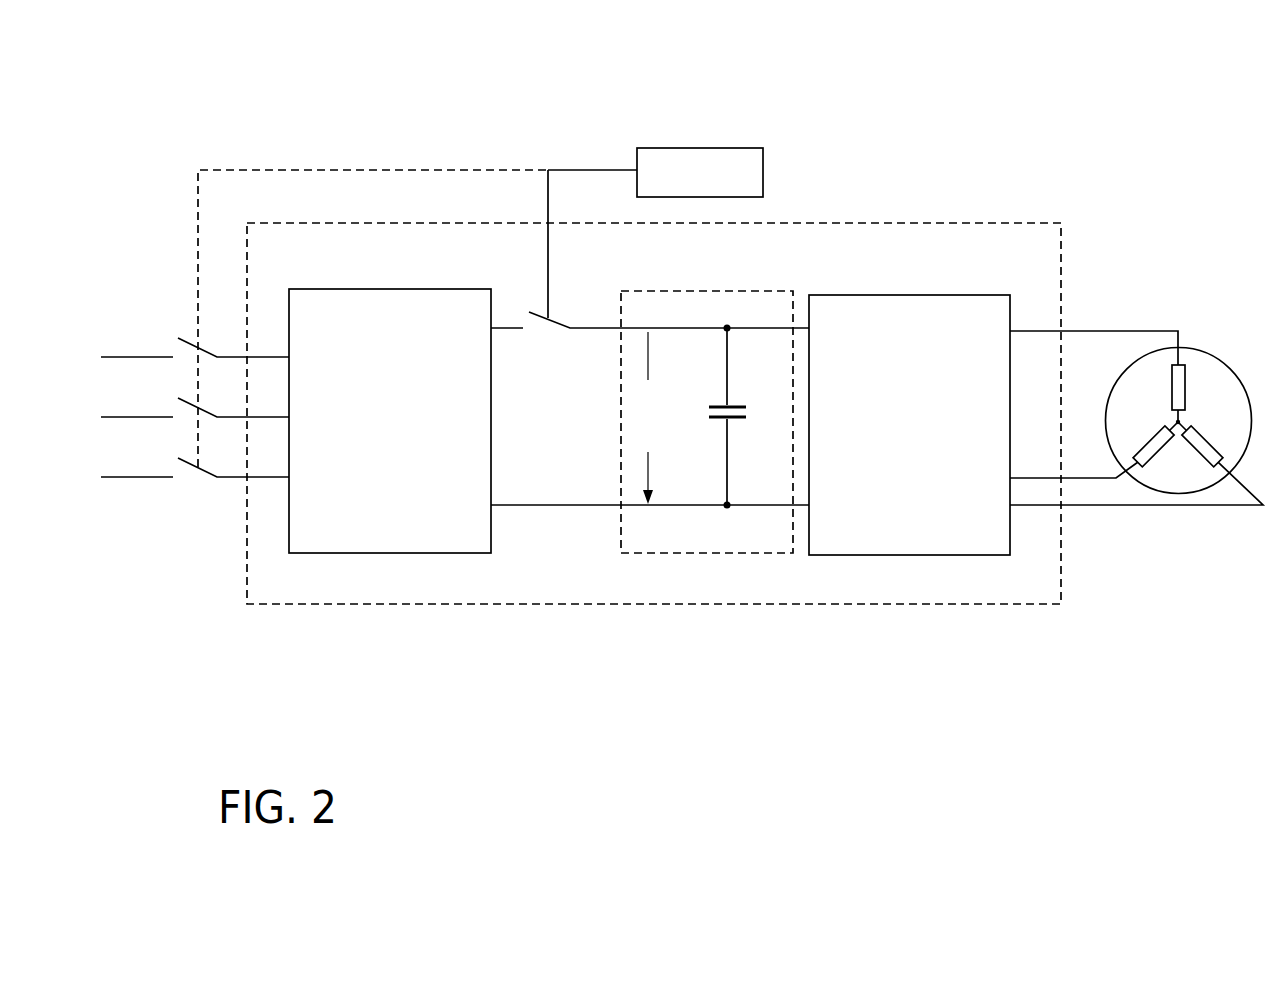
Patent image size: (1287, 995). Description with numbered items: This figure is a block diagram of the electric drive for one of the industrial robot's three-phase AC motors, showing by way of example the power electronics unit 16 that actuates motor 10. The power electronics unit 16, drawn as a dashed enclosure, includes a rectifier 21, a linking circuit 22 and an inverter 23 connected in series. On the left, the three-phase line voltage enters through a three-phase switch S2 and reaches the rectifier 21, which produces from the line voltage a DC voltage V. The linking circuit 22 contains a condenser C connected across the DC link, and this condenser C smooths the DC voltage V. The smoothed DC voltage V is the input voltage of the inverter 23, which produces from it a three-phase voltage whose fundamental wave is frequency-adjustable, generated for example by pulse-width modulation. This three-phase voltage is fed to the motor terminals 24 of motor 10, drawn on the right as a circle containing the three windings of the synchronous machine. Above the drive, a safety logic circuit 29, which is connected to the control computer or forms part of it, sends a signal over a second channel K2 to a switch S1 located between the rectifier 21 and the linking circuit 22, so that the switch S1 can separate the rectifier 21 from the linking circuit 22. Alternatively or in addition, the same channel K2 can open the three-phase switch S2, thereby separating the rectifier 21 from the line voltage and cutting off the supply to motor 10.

The motor 10 is at (1144, 401).
The power electronics unit 16 is at (510, 588).
The rectifier 21 is at (374, 517).
The linking circuit 22 is at (707, 485).
The inverter 23 is at (889, 537).
The motor terminals 24 is at (1178, 350).
The safety logic circuit 29 is at (689, 148).
The switch S1 is at (557, 328).
The three-phase switch S2 is at (203, 472).
The second channel K2 is at (570, 170).
The condenser C is at (733, 422).
The DC voltage V is at (648, 418).